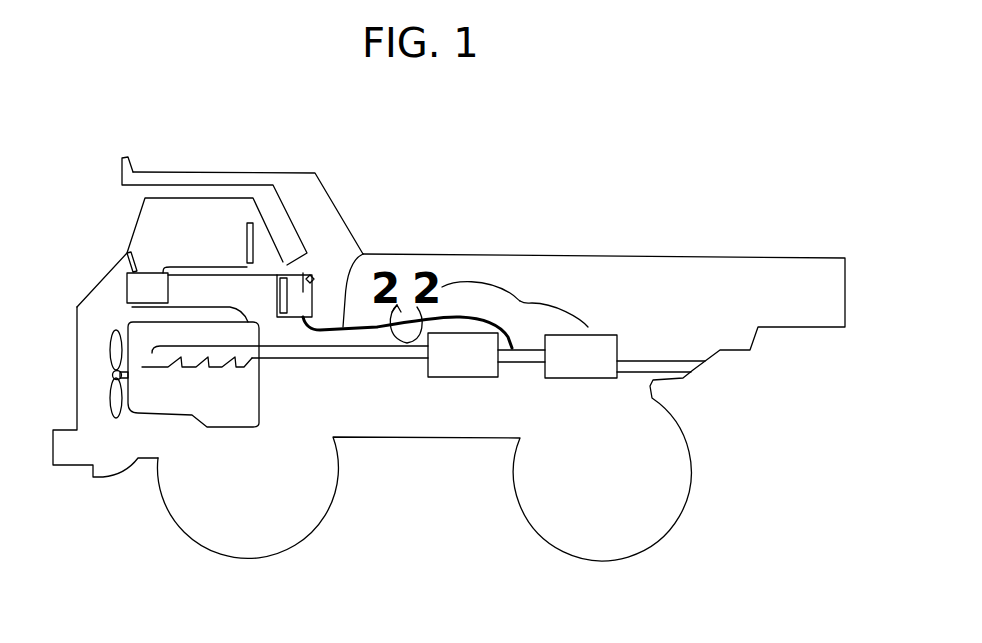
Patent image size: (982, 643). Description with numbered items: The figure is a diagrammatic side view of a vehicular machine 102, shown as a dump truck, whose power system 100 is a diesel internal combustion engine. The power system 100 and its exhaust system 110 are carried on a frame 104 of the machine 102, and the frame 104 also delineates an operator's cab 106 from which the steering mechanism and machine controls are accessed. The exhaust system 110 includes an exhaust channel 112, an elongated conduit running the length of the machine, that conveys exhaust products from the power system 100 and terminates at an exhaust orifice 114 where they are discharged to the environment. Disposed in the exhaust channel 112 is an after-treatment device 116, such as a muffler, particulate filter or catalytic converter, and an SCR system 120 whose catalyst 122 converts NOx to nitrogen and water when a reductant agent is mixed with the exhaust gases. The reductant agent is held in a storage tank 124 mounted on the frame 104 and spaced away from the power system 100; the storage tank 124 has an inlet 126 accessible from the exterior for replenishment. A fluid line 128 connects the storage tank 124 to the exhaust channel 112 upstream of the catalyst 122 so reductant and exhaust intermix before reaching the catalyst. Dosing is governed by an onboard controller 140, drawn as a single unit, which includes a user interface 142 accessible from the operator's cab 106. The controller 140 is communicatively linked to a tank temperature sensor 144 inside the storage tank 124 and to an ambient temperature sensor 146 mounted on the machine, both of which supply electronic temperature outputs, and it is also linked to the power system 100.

The power system 100 is at (248, 378).
The machine 102 is at (608, 257).
The frame 104 is at (77, 390).
The operator's cab 106 is at (185, 233).
The exhaust system 110 is at (503, 383).
The exhaust channel 112 is at (383, 358).
The exhaust orifice 114 is at (693, 372).
The after-treatment device 116 is at (468, 282).
The SCR system 120 is at (520, 300).
The catalyst 122 is at (618, 338).
The storage tank 124 is at (303, 273).
The inlet 126 is at (312, 279).
The fluid line 128 is at (363, 254).
The controller 140 is at (127, 289).
The user interface 142 is at (127, 253).
The tank temperature sensor 144 is at (283, 277).
The ambient temperature sensor 146 is at (247, 240).